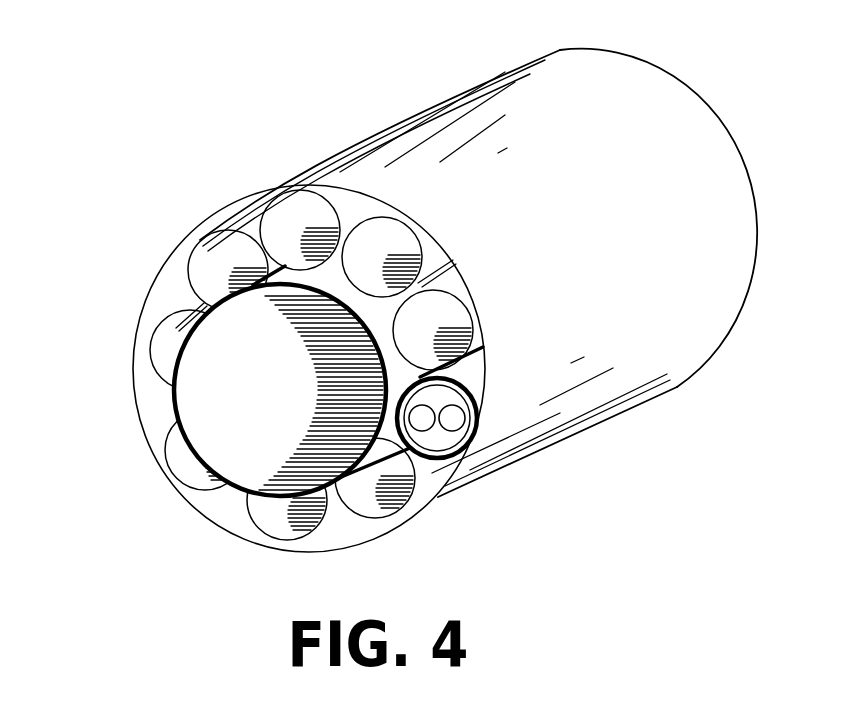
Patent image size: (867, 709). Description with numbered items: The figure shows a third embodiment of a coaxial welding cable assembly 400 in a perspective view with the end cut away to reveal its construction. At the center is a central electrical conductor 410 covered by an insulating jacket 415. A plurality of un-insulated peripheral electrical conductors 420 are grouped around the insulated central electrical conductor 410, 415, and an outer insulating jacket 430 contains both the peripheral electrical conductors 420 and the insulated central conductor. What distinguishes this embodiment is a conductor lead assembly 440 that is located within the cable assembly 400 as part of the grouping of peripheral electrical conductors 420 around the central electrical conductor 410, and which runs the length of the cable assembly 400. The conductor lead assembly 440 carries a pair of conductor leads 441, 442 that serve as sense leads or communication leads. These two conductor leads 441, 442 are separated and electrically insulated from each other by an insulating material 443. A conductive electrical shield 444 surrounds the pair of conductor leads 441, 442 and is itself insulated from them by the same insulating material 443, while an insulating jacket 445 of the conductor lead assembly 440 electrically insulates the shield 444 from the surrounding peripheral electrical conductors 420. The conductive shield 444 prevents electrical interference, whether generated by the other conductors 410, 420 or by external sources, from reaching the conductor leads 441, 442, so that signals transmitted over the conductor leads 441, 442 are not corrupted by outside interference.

The coaxial welding cable assembly 400 is at (384, 327).
The central electrical conductor 410 is at (247, 403).
The insulating jacket 415 is at (192, 453).
The peripheral electrical conductors 420 is at (293, 225).
The insulating jacket 430 is at (538, 207).
The conductor lead assembly 440 is at (460, 467).
The conductor lead 441 is at (422, 422).
The conductor lead 442 is at (450, 422).
The insulating material 443 is at (468, 491).
The conductive electrical shield 444 is at (470, 432).
The insulating jacket 445 is at (470, 395).